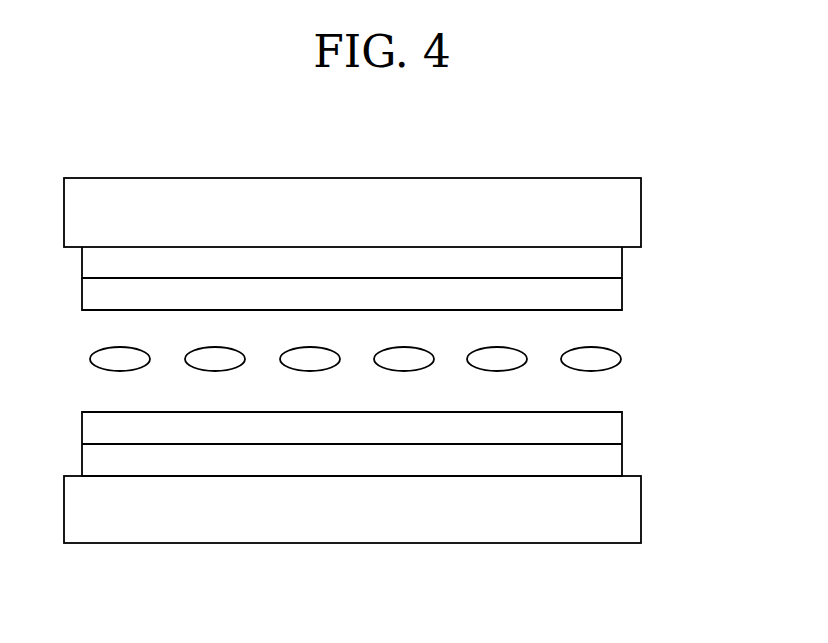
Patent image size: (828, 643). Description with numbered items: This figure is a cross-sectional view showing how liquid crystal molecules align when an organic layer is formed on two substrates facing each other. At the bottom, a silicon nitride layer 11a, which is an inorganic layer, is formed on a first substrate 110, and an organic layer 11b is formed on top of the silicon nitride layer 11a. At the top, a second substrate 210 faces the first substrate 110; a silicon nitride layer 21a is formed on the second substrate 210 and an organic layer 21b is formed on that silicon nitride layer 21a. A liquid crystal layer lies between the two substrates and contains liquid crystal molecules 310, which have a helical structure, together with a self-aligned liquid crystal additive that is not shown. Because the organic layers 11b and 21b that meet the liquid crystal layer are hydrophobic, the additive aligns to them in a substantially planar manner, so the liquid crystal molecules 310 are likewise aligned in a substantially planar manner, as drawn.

The second substrate 210 is at (143, 210).
The silicon nitride layer 21a is at (263, 260).
The organic layer 21b is at (383, 293).
The liquid crystal molecules 310 is at (621, 360).
The organic layer 11b is at (292, 431).
The silicon nitride layer 11a is at (404, 458).
The first substrate 110 is at (550, 508).